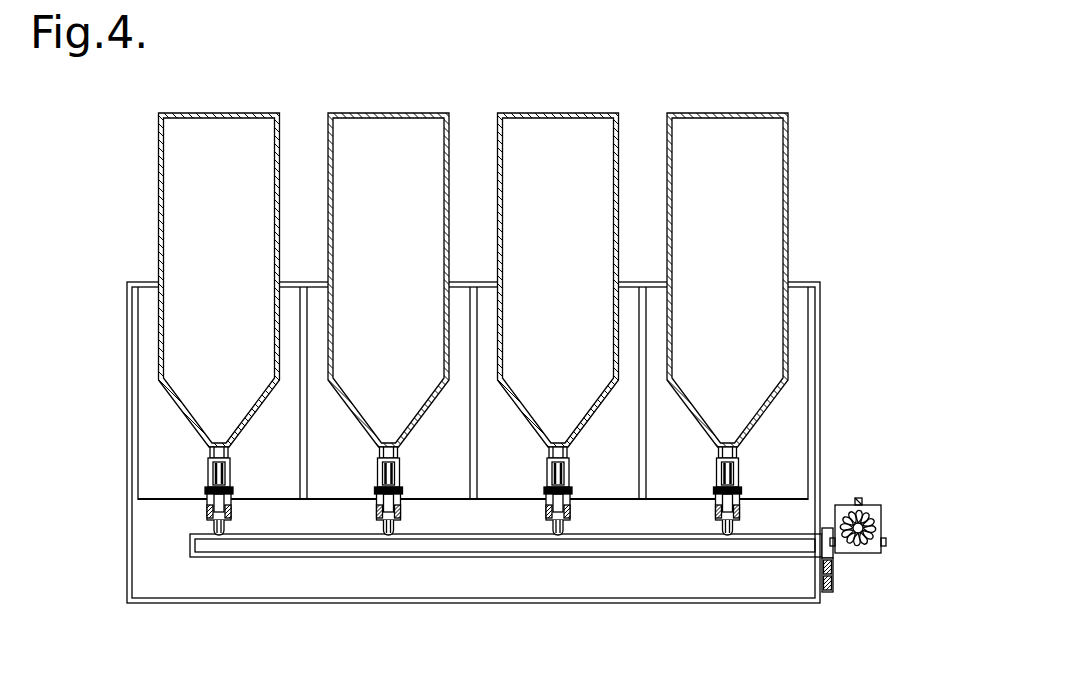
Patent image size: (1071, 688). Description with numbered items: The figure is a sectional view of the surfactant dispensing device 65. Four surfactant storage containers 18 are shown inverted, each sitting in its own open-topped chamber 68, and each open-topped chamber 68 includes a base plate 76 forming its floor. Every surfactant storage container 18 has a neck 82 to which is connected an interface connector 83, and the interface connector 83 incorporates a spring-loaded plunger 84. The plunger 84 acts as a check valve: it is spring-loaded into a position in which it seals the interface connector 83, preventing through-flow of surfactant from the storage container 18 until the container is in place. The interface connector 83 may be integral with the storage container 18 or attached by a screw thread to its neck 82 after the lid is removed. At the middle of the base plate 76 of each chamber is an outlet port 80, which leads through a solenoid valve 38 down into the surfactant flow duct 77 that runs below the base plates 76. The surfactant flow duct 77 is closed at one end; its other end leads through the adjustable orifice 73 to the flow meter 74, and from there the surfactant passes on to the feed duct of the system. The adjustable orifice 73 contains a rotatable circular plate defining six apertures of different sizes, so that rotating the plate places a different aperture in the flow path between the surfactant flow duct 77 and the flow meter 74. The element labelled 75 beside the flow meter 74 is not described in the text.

The surfactant storage container 18 is at (180, 152).
The solenoid valve 38 is at (213, 540).
The surfactant dispensing device 65 is at (832, 263).
The open-topped chamber 68 is at (165, 425).
The adjustable orifice 73 is at (832, 594).
The flow meter 74 is at (868, 550).
The motor shaft connector 75 is at (889, 542).
The base plate 76 is at (165, 502).
The surfactant flow duct 77 is at (307, 548).
The outlet port 80 is at (203, 505).
The neck 82 is at (397, 448).
The interface connector 83 is at (377, 482).
The spring-loaded plunger 84 is at (400, 475).